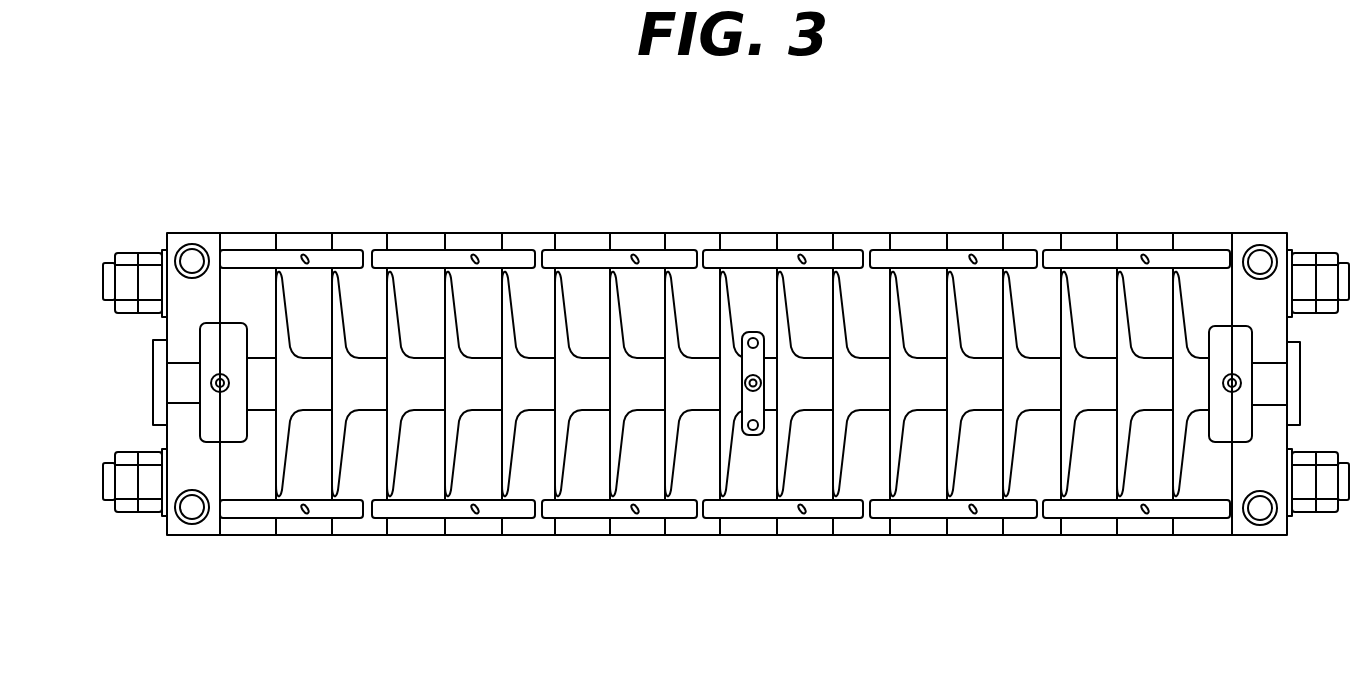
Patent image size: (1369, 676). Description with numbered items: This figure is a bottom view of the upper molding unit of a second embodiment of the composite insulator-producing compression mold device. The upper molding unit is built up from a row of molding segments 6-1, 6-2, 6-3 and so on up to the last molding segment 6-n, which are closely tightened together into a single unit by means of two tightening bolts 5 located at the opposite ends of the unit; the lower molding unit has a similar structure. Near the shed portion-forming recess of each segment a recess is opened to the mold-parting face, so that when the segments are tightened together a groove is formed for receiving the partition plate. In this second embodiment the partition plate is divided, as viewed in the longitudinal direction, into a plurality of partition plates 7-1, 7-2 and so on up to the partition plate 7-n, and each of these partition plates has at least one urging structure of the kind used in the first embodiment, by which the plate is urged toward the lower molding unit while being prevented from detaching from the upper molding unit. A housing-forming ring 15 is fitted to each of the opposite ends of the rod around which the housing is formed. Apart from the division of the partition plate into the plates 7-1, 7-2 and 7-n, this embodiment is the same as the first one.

The tightening bolt 5 is at (1327, 247).
The housing-forming ring 15 is at (220, 360).
The molding segment 6-1 is at (183, 534).
The molding segment 6-2 is at (247, 535).
The molding segment 6-3 is at (305, 535).
The molding segment 6-n is at (1252, 535).
The partition plate 7-1 is at (252, 252).
The partition plate 7-2 is at (418, 253).
The partition plate 7-n is at (1088, 257).